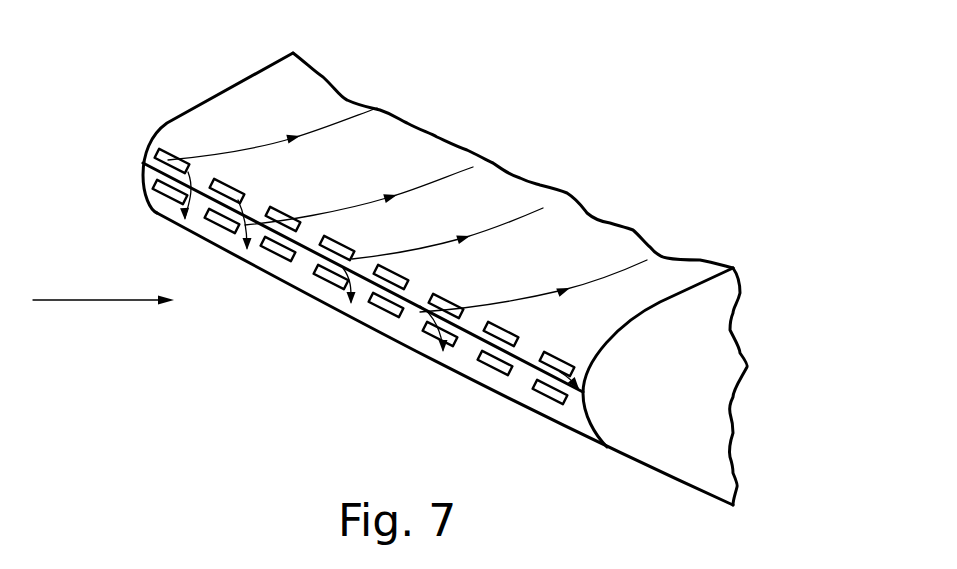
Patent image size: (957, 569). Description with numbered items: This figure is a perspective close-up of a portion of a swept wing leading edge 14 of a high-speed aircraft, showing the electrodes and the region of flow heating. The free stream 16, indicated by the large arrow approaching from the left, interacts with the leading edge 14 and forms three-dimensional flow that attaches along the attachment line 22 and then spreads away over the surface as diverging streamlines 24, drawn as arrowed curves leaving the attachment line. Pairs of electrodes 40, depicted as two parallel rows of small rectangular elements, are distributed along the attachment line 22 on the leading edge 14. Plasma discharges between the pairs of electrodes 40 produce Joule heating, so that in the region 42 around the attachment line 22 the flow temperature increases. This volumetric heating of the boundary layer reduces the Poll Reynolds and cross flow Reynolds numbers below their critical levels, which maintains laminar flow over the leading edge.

The leading edge 14 is at (267, 88).
The free stream 16 is at (90, 300).
The attachment line 22 is at (205, 195).
The diverging streamlines 24 is at (448, 177).
The pairs of electrodes 40 is at (513, 353).
The region of flow heating 42 is at (302, 268).